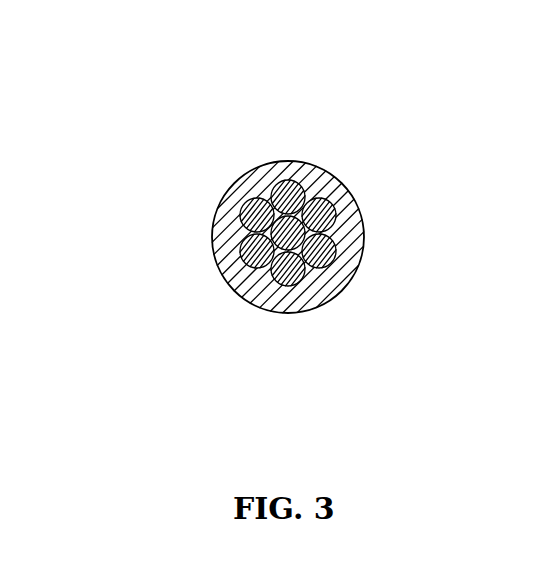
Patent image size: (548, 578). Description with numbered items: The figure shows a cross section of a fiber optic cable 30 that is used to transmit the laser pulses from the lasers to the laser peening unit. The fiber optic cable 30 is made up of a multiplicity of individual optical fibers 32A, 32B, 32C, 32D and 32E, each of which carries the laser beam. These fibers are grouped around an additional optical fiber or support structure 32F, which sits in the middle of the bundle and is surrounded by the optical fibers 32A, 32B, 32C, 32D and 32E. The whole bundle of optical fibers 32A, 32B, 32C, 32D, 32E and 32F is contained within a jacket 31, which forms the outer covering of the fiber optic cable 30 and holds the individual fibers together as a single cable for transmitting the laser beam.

The fiber optic cable 30 is at (213, 227).
The jacket 31 is at (223, 220).
The optical fiber 32A is at (243, 281).
The optical fiber 32B is at (328, 248).
The optical fiber 32C is at (330, 208).
The optical fiber 32D is at (291, 180).
The optical fiber 32E is at (263, 200).
The additional optical fiber or support structure 32F is at (300, 262).